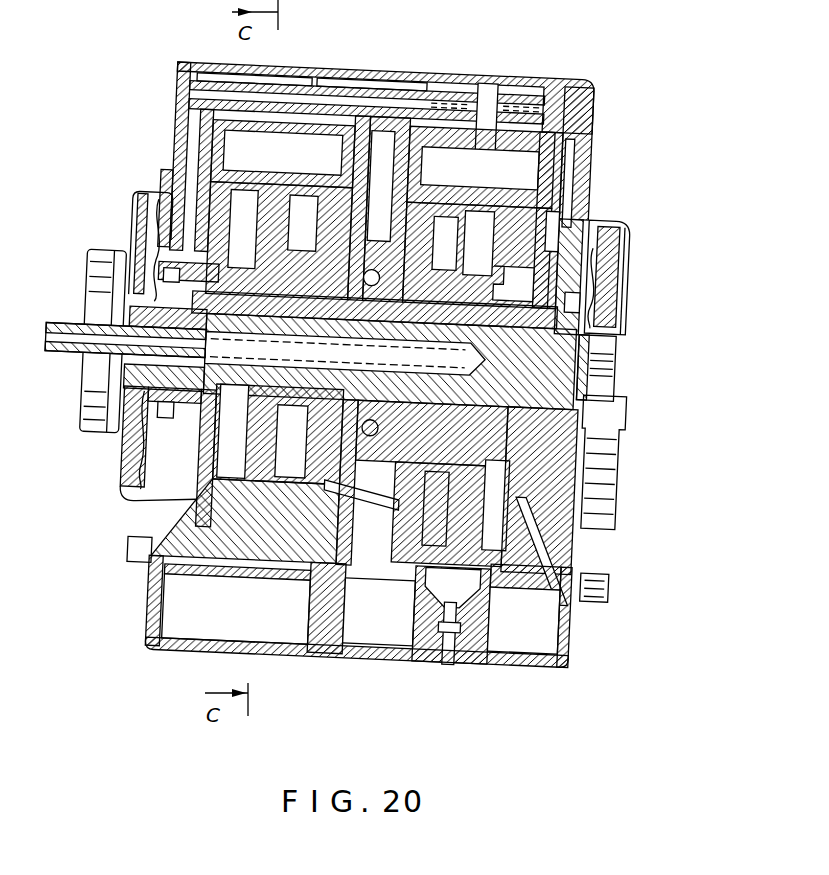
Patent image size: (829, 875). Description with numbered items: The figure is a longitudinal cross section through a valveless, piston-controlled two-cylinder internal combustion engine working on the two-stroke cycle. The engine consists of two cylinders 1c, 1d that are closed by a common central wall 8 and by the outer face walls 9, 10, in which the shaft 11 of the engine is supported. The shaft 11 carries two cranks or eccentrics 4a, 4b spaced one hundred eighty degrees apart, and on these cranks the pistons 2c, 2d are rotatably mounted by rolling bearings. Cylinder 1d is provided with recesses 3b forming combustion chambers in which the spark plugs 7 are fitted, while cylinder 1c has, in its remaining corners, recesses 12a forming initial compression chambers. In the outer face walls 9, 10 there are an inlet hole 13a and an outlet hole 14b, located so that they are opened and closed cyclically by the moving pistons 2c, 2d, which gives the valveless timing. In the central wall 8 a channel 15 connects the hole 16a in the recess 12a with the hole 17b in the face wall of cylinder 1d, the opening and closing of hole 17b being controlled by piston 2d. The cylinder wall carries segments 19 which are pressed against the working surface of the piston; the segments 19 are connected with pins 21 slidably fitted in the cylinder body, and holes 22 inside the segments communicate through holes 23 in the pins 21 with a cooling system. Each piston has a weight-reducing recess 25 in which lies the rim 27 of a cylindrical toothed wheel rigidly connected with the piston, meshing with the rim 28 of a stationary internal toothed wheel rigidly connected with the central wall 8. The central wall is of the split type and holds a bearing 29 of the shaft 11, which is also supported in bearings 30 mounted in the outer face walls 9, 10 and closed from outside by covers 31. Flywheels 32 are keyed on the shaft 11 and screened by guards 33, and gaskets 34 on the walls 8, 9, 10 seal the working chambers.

The cylinder 1c is at (230, 575).
The cylinder 1d is at (483, 653).
The piston 2c is at (267, 187).
The piston 2d is at (424, 150).
The recess 3b is at (433, 660).
The crank 4a is at (270, 270).
The crank 4b is at (512, 455).
The spark plug 7 is at (458, 663).
The central wall 8 is at (340, 262).
The outer face wall 9 is at (148, 504).
The outer face wall 10 is at (553, 507).
The shaft 11 is at (150, 252).
The recess 12a is at (228, 568).
The inlet hole 13a is at (152, 520).
The outlet hole 14b is at (570, 600).
The channel 15 is at (355, 515).
The hole 16a is at (333, 490).
The hole 17b is at (382, 555).
The segment 19 is at (467, 187).
The pin 21 is at (503, 90).
The hole 22 is at (407, 135).
The hole 23 is at (483, 85).
The recess 25 is at (513, 213).
The rim 27 is at (513, 277).
The rim 28 is at (452, 268).
The bearing 29 is at (382, 270).
The bearing 30 is at (605, 331).
The cover 31 is at (150, 235).
The flywheel 32 is at (617, 238).
The guard 33 is at (95, 268).
The gasket 34 is at (547, 233).